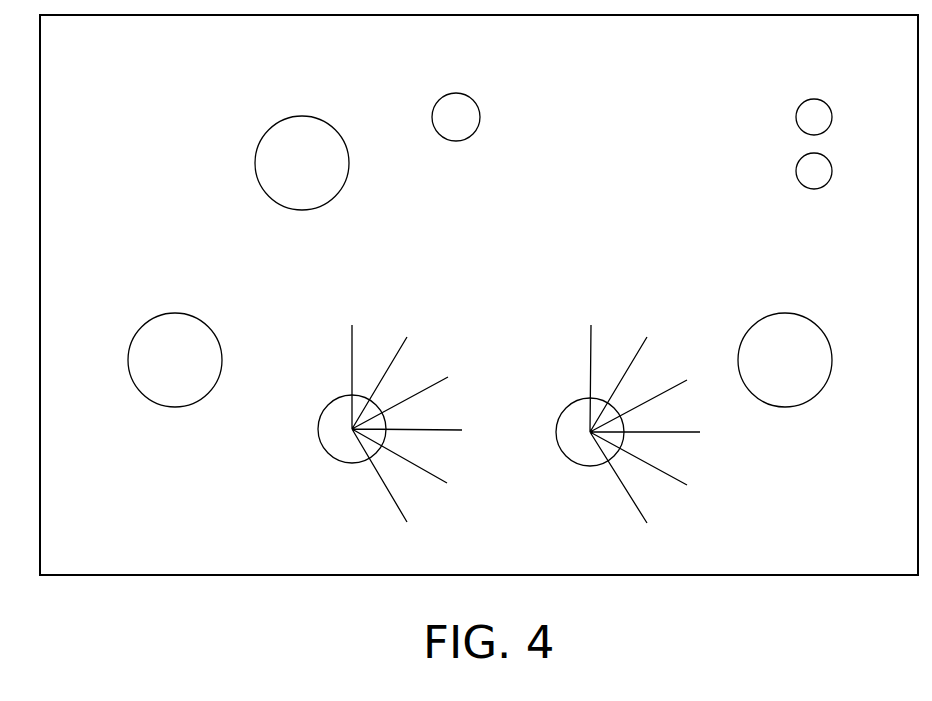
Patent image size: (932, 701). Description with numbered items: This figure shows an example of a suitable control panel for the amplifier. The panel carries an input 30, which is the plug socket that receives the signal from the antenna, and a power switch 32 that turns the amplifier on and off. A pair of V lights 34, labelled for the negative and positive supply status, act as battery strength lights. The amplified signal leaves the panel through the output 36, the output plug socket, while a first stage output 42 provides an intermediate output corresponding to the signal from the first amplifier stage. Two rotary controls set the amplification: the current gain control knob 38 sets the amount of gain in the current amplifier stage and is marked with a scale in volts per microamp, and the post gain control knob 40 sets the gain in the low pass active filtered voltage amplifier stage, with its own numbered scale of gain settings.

The input 30 is at (175, 407).
The power switch 32 is at (455, 141).
The V lights 34 is at (832, 118).
The output 36 is at (786, 313).
The current gain control knob 38 is at (343, 462).
The post gain control knob 40 is at (578, 465).
The first stage output 42 is at (255, 162).